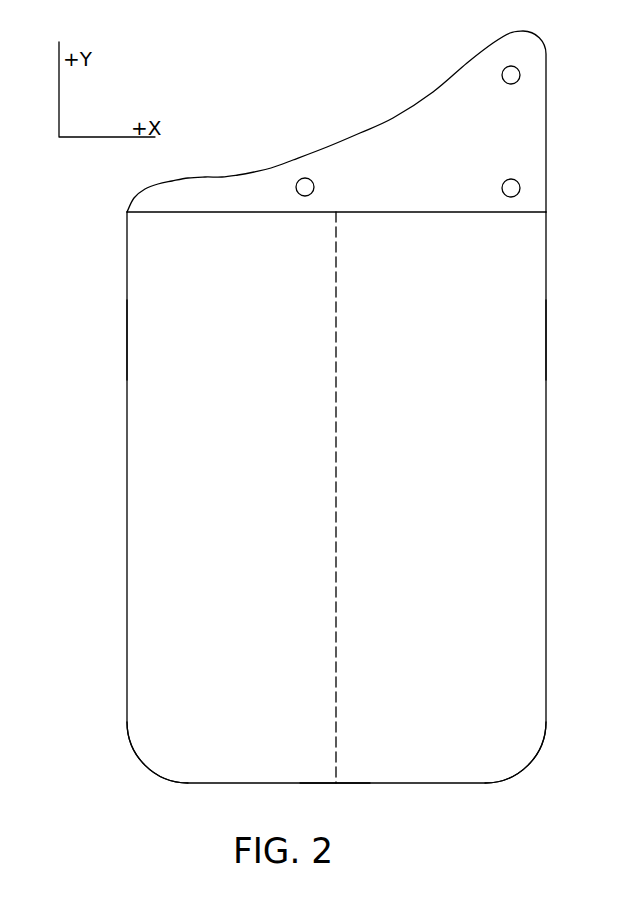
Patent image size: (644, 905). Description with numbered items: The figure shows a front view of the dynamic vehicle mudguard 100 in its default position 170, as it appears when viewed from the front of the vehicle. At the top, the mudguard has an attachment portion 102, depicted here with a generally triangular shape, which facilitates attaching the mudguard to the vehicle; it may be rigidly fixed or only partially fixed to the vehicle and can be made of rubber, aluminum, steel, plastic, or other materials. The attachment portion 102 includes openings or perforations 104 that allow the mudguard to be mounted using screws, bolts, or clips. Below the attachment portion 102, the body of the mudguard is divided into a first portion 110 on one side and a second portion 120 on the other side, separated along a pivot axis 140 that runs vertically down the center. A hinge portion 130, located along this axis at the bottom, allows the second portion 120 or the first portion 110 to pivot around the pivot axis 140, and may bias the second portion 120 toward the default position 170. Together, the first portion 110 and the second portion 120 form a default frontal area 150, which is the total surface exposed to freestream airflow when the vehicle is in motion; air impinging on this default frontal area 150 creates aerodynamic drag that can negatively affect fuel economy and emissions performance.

The dynamic vehicle mudguard 100 is at (339, 446).
The attachment portion 102 is at (383, 127).
The openings or perforations 104 is at (314, 185).
The first portion 110 is at (127, 340).
The second portion 120 is at (546, 340).
The hinge portion 130 is at (337, 790).
The pivot axis 140 is at (336, 438).
The default frontal area 150 is at (152, 777).
The default position 170 is at (523, 780).